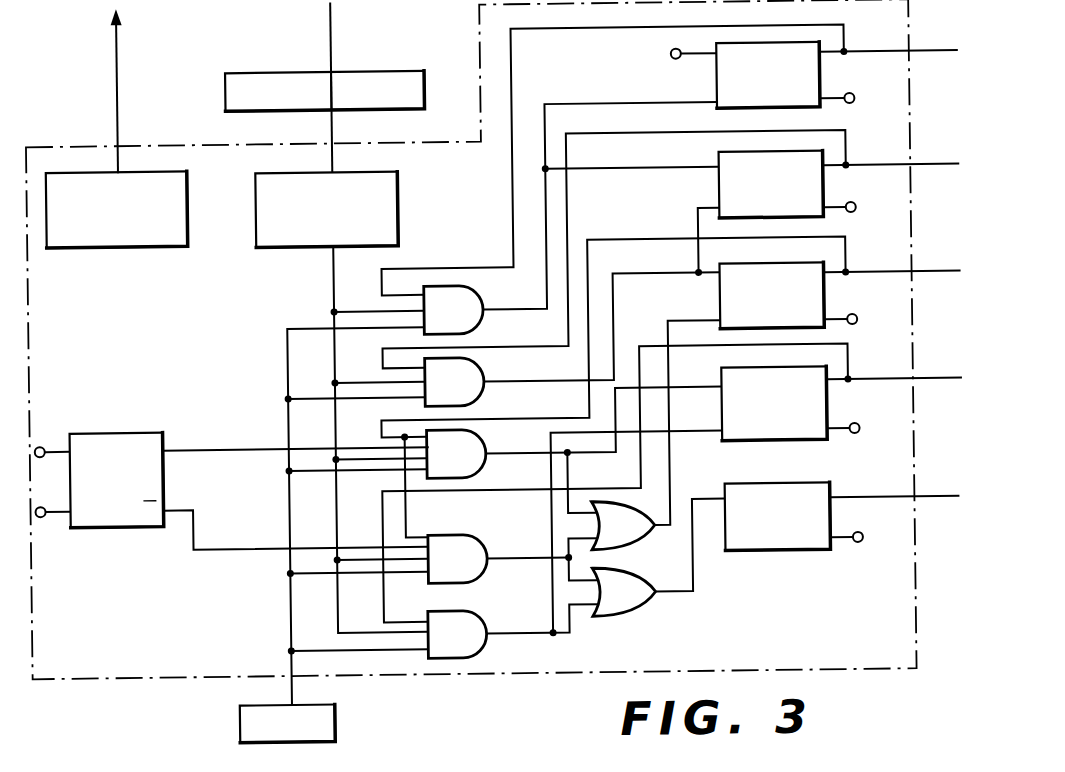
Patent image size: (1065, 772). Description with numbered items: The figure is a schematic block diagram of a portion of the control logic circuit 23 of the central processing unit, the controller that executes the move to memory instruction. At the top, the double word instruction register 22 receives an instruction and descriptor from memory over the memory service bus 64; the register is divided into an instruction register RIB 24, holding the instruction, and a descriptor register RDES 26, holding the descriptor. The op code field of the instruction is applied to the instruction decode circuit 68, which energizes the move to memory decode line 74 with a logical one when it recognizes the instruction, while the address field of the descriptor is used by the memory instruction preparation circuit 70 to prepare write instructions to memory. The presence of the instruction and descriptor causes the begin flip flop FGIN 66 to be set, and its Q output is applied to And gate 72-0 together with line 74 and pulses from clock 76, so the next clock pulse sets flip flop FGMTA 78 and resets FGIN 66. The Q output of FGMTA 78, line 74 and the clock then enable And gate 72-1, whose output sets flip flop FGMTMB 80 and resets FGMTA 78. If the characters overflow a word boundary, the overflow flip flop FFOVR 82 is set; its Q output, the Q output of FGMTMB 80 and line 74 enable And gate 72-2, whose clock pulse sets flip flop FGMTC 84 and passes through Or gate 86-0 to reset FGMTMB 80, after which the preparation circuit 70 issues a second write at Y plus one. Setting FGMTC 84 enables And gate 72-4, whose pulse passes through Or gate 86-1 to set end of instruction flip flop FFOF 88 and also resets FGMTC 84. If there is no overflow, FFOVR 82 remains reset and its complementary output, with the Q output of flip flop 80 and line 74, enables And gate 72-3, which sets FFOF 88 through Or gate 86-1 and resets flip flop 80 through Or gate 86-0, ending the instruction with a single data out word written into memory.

The memory service bus ZRMS 64 is at (336, 10).
The instruction register RIB 24 is at (245, 68).
The double word instruction register 22 is at (403, 62).
The descriptor register RDES 26 is at (429, 87).
The memory instruction preparation circuit 70 is at (190, 186).
The instruction decode circuit 68 is at (400, 182).
The move to memory instruction decode line 74 is at (335, 271).
The clock 76 is at (236, 714).
The overflow flip flop FFOVR 82 is at (132, 428).
The And gate 72-0 is at (478, 296).
The And gate 72-1 is at (478, 374).
The And gate 72-2 is at (479, 446).
The And gate 72-3 is at (480, 541).
The And gate 72-4 is at (478, 613).
The flip flop FGIN 66 is at (826, 76).
The flip flop FGMTA 78 is at (827, 190).
The flip flop FGMTMB 80 is at (828, 297).
The flip flop FGMTC 84 is at (828, 408).
The end of instruction flip flop FFOF 88 is at (830, 520).
The Or gate 86-0 is at (640, 549).
The Or gate 86-1 is at (640, 617).
The control logic circuit 23 is at (872, 636).